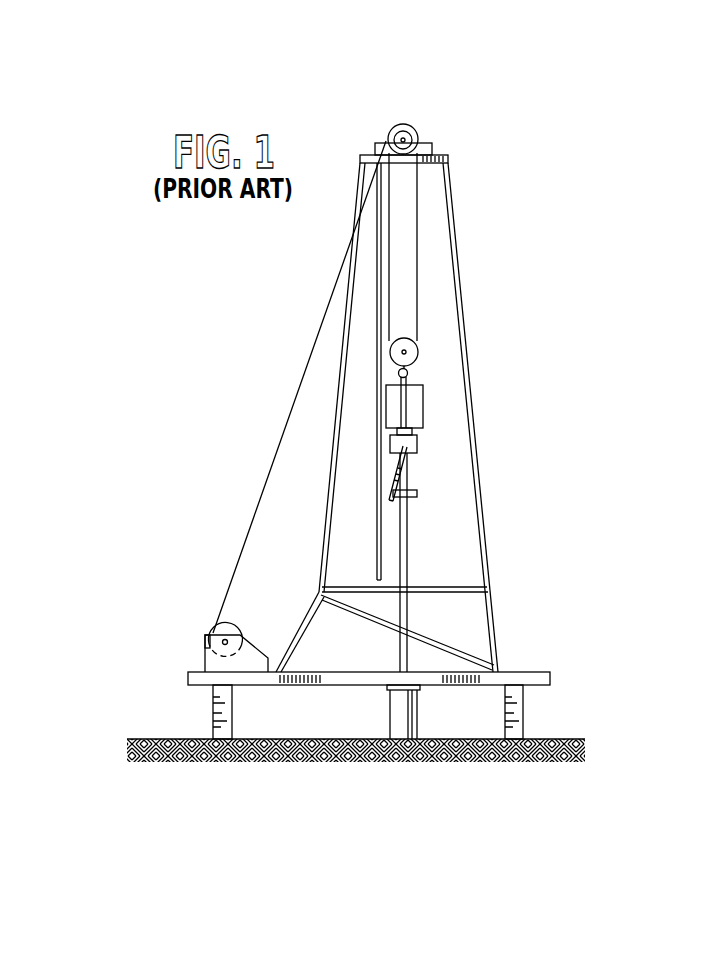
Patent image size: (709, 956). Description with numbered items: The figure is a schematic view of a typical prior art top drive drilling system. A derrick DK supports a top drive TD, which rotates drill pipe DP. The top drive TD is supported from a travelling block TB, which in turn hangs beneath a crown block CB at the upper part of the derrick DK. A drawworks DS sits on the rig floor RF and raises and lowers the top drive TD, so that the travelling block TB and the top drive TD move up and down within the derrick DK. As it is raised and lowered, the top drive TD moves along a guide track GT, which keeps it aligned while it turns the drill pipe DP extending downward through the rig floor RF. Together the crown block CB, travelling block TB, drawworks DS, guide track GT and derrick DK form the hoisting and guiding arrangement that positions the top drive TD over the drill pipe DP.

The crown block CB is at (433, 144).
The travelling block TB is at (418, 353).
The top drive TD is at (420, 417).
The drill pipe DP is at (408, 528).
The rig floor RF is at (455, 672).
The derrick DK is at (343, 330).
The guide track GT is at (377, 500).
The drawworks DS is at (221, 645).